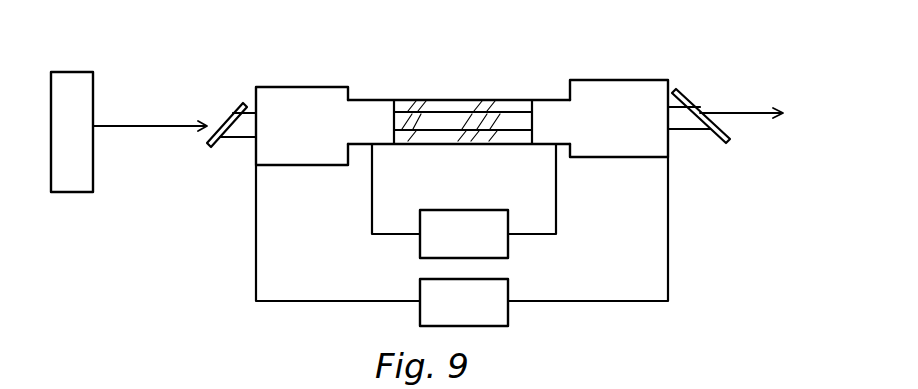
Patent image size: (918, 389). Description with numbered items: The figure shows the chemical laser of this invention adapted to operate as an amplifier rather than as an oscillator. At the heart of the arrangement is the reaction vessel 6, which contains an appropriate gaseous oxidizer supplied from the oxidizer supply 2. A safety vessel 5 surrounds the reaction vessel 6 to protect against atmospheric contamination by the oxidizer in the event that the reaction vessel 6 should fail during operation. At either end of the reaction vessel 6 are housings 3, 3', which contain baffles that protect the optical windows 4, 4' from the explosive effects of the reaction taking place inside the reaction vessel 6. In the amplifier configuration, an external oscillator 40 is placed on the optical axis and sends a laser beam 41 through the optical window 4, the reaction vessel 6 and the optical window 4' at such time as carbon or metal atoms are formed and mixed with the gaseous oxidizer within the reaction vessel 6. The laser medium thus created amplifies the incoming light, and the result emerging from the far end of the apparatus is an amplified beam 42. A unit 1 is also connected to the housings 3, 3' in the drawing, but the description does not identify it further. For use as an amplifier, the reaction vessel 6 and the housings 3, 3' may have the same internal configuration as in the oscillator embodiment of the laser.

The power supply 1 is at (470, 315).
The oxidizer supply 2 is at (470, 247).
The housing 3 is at (302, 126).
The housing 3' is at (619, 118).
The optical window 4 is at (235, 83).
The optical window 4' is at (689, 83).
The safety vessel 5 is at (402, 100).
The reaction vessel 6 is at (443, 111).
The oscillator 40 is at (60, 72).
The laser beam 41 is at (128, 126).
The amplified beam 42 is at (760, 116).